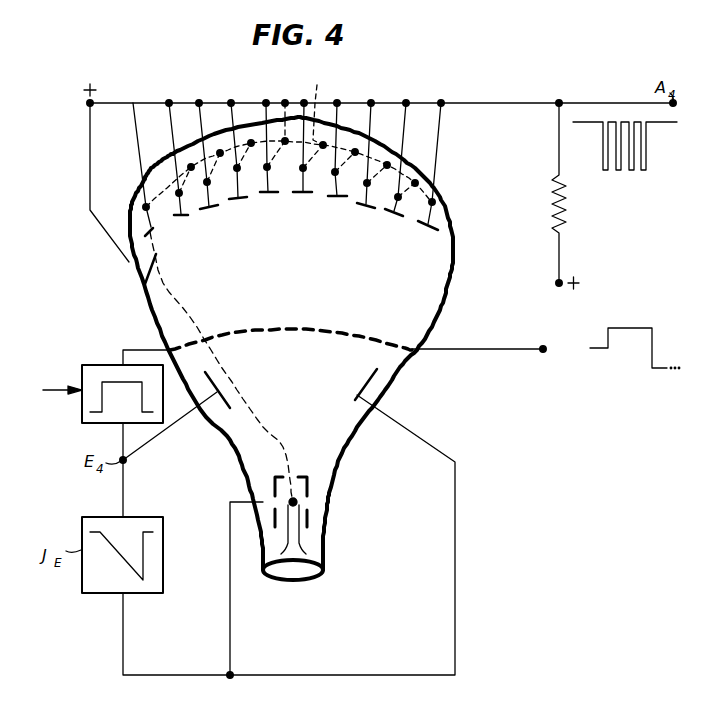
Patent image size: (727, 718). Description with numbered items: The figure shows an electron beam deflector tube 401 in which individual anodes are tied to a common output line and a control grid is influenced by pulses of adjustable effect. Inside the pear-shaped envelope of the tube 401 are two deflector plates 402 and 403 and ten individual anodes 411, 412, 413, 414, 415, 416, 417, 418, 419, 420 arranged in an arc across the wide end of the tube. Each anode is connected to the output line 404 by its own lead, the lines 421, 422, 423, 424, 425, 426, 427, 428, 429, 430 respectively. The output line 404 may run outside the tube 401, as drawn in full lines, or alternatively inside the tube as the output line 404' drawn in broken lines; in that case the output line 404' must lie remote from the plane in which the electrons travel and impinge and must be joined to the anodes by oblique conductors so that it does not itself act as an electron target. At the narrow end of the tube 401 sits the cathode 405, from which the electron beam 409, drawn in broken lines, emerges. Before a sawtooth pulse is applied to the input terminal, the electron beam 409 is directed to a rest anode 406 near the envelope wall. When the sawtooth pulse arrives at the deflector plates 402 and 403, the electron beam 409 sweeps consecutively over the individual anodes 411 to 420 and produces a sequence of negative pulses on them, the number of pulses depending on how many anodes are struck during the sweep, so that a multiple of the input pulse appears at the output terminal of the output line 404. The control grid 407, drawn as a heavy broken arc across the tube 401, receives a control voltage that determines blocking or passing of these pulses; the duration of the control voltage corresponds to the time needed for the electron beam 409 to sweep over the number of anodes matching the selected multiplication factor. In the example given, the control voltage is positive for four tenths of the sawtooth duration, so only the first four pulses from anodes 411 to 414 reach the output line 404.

The electron beam deflector tube 401 is at (446, 283).
The deflector plate 402 is at (176, 416).
The deflector plate 403 is at (357, 400).
The output line 404 is at (383, 90).
The output line 404' is at (309, 107).
The cathode 405 is at (292, 506).
The rest anode 406 is at (133, 272).
The control grid 407 is at (308, 330).
The electron beam 409 is at (200, 331).
The individual anode 411 is at (162, 236).
The individual anode 412 is at (186, 217).
The individual anode 413 is at (202, 210).
The individual anode 414 is at (231, 200).
The individual anode 415 is at (262, 193).
The individual anode 416 is at (295, 193).
The individual anode 417 is at (345, 197).
The individual anode 418 is at (358, 204).
The individual anode 419 is at (402, 216).
The individual anode 420 is at (434, 231).
The line 421 is at (137, 146).
The line 422 is at (169, 110).
The line 423 is at (199, 112).
The line 424 is at (232, 113).
The line 425 is at (265, 113).
The line 426 is at (303, 110).
The line 427 is at (337, 112).
The line 428 is at (372, 112).
The line 429 is at (407, 110).
The line 430 is at (439, 136).